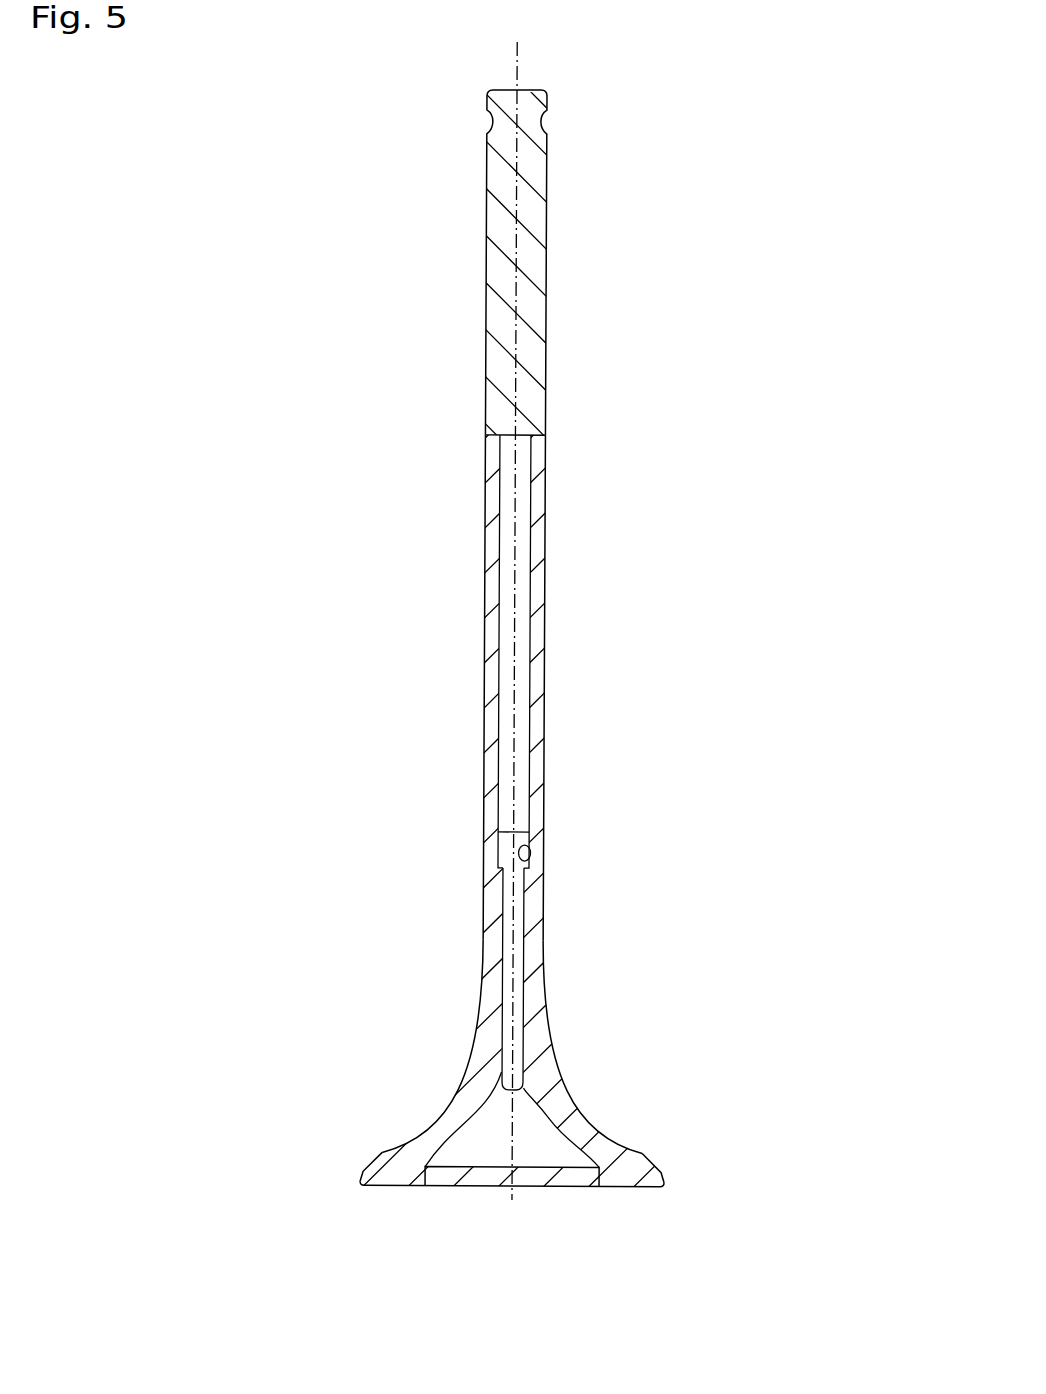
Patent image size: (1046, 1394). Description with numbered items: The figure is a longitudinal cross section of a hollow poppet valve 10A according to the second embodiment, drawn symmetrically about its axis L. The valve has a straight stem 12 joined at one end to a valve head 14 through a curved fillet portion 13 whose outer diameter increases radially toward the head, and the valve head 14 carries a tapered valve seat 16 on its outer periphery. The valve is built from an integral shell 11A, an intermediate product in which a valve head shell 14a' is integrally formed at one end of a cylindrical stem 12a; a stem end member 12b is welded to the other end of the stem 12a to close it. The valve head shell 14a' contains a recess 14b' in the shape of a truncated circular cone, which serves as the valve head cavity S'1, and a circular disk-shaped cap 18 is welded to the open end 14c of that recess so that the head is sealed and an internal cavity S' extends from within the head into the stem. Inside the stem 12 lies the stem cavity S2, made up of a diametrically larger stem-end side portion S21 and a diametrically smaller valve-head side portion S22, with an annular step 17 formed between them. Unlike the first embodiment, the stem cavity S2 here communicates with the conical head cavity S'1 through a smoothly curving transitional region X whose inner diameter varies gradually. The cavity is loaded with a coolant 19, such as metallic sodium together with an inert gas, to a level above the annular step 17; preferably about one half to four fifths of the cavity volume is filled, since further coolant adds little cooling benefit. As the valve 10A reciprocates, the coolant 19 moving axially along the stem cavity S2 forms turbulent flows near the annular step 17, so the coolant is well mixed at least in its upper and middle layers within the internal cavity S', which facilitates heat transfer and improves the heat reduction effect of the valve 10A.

The hollow poppet valve 10A is at (426, 246).
The valve axis L is at (520, 82).
The stem 12 is at (550, 525).
The stem end member 12b is at (548, 268).
The cylindrical stem 12a is at (546, 746).
The integral shell 11A is at (707, 728).
The fillet portion 13 is at (562, 1101).
The valve head 14 is at (613, 1137).
The valve head shell 14a' is at (517, 791).
The valve seat 16 is at (652, 1160).
The open end 14c is at (438, 1190).
The cap 18 is at (564, 1188).
The recess 14b' is at (548, 1179).
The internal cavity S' is at (409, 801).
The stem cavity S2 is at (390, 824).
The stem-end side portion S21 is at (506, 802).
The valve-head side portion S22 is at (507, 958).
The valve head cavity S'1 is at (414, 1080).
The coolant 19 is at (520, 830).
The annular step 17 is at (532, 852).
The transitional region X is at (497, 1085).